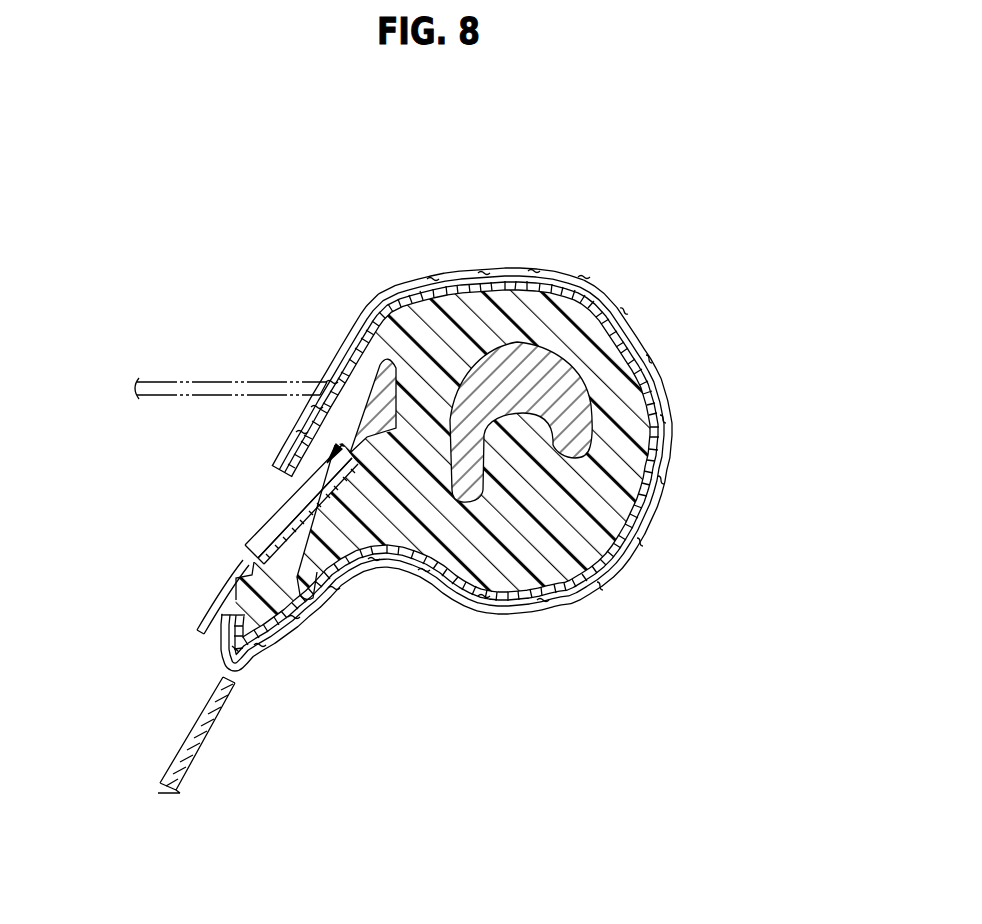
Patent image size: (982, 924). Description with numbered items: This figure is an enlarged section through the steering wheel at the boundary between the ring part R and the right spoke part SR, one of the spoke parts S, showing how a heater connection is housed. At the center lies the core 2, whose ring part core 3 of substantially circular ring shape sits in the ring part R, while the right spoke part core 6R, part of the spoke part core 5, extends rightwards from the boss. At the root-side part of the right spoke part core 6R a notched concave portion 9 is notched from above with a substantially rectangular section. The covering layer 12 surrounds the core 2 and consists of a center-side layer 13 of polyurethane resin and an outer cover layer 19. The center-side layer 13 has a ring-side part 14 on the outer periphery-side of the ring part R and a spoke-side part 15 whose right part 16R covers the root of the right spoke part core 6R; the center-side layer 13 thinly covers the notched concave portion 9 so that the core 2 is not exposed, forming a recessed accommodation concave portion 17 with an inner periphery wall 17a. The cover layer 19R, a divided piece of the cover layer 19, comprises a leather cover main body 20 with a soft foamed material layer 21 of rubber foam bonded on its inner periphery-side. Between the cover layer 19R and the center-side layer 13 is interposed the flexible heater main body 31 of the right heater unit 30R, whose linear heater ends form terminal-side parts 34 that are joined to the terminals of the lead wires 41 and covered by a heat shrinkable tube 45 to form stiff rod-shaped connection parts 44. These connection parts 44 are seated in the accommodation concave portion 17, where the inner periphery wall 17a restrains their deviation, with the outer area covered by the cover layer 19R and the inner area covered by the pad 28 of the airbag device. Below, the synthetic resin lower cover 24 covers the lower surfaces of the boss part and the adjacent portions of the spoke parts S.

The covering layer 12 is at (474, 415).
The ring-side part 14 is at (446, 422).
The center-side layer 13 is at (482, 307).
The cover layer 19R is at (449, 392).
The cover layer 19 is at (449, 392).
The cover main body 20 is at (565, 279).
The soft foamed material layer 21 is at (602, 297).
The heater main body 31 is at (502, 396).
The heater unit 30R is at (427, 292).
The accommodation concave portion 17 is at (312, 440).
The inner periphery wall 17a is at (330, 462).
The ring part core 3 is at (538, 422).
The core 2 is at (570, 390).
The right part 16R is at (298, 634).
The spoke-side part 15 is at (313, 573).
The right spoke part core 6R is at (361, 623).
The spoke part core 5 is at (307, 585).
The connection part 44 is at (222, 562).
The heat shrinkable tube 45 is at (283, 513).
The notched concave portion 9 is at (248, 534).
The lead wire 41 is at (194, 633).
The terminal-side part 34 is at (198, 629).
The pad 28 is at (206, 383).
The lower cover 24 is at (205, 725).
The right spoke part SR is at (157, 766).
The spoke part S is at (200, 758).
The ring part R is at (406, 415).